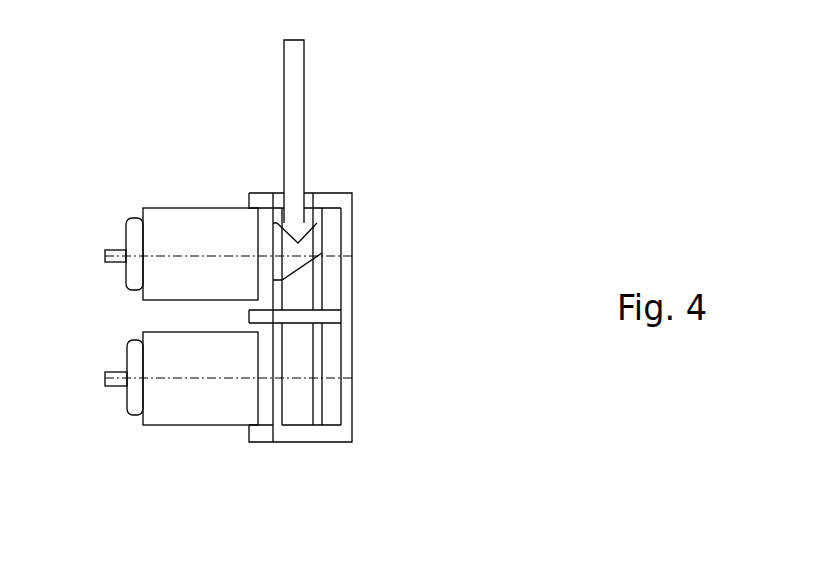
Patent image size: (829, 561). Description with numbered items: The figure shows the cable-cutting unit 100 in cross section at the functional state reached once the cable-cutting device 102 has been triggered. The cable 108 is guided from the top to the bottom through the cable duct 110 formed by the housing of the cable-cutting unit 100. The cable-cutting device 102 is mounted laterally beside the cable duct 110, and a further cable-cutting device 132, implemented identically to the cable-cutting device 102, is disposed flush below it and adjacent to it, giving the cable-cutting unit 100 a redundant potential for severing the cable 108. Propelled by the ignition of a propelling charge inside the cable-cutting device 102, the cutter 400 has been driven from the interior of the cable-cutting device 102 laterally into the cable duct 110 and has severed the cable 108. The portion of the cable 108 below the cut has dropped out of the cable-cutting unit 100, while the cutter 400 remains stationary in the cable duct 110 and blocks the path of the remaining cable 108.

The cable-cutting unit 100 is at (148, 133).
The cable-cutting device 102 is at (206, 208).
The cable 108 is at (303, 92).
The cable duct 110 is at (299, 409).
The further cable-cutting device 132 is at (197, 425).
The cutter 400 is at (297, 245).